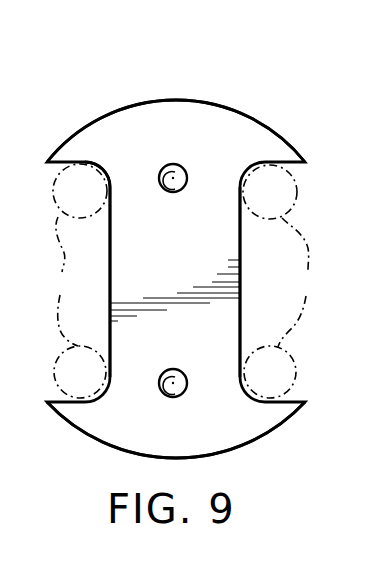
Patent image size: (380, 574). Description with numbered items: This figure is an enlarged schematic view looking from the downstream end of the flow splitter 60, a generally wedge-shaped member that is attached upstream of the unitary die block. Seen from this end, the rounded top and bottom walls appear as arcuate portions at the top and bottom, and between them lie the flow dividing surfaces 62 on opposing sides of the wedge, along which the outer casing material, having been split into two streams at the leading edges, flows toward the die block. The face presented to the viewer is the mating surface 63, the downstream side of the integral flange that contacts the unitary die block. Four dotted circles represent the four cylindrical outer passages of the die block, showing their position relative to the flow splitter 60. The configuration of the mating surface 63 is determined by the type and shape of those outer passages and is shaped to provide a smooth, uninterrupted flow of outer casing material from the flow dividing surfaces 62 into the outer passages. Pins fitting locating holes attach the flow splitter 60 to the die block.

The flow splitter 60 is at (132, 94).
The flow dividing surfaces 62 is at (240, 247).
The mating surface 63 is at (130, 148).